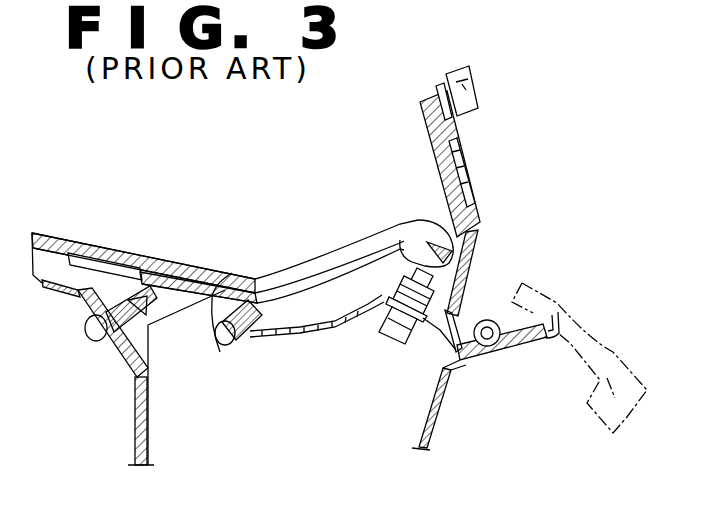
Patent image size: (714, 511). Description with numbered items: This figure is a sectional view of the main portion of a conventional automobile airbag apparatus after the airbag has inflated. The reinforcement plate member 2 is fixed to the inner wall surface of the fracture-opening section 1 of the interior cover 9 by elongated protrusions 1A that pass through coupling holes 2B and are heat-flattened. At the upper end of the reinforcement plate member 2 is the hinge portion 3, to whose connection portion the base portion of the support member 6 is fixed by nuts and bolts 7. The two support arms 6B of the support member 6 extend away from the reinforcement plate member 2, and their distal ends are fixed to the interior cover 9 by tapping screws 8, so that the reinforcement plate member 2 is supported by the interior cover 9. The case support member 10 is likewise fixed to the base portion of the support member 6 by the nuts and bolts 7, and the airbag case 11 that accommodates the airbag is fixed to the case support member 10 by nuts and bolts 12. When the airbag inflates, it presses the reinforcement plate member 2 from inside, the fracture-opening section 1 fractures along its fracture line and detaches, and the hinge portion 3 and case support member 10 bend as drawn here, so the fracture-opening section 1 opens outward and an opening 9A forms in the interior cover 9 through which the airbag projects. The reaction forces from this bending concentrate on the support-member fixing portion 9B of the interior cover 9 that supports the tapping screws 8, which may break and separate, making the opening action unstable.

The fracture-opening section 1 is at (627, 350).
The elongated protrusions 1A is at (458, 126).
The reinforcement plate member 2 is at (462, 165).
The coupling holes 2B is at (452, 92).
The hinge portion 3 is at (483, 263).
The support member 6 is at (300, 340).
The support arms 6B is at (232, 273).
The nuts and bolts 7 is at (393, 343).
The tapping screws 8 is at (220, 367).
The interior cover 9 is at (313, 257).
The opening 9A is at (400, 237).
The support-member fixing portion 9B is at (252, 343).
The case support member 10 is at (445, 335).
The airbag case 11 is at (423, 425).
The nuts and bolts 12 is at (497, 373).